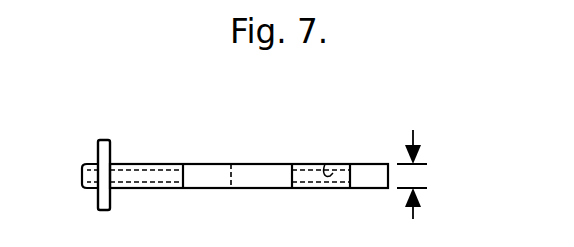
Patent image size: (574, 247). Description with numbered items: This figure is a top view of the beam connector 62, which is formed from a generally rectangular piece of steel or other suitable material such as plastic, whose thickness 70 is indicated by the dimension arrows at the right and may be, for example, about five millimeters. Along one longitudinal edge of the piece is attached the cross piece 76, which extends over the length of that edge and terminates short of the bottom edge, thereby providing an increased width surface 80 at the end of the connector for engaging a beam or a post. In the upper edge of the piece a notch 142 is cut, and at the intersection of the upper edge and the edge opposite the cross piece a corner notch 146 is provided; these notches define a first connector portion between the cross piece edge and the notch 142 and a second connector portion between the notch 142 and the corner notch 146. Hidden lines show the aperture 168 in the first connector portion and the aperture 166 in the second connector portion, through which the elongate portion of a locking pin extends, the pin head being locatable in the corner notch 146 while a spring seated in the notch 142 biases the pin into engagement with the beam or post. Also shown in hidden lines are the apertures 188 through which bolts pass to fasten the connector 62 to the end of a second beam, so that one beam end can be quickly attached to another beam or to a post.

The increased width surface 80 is at (98, 150).
The cross piece 76 is at (104, 140).
The aperture 168 is at (158, 170).
The notch 142 is at (186, 170).
The apertures 188 is at (274, 178).
The beam connector 62 is at (307, 164).
The aperture 166 is at (325, 164).
The corner notch 146 is at (356, 171).
The thickness 70 is at (415, 174).